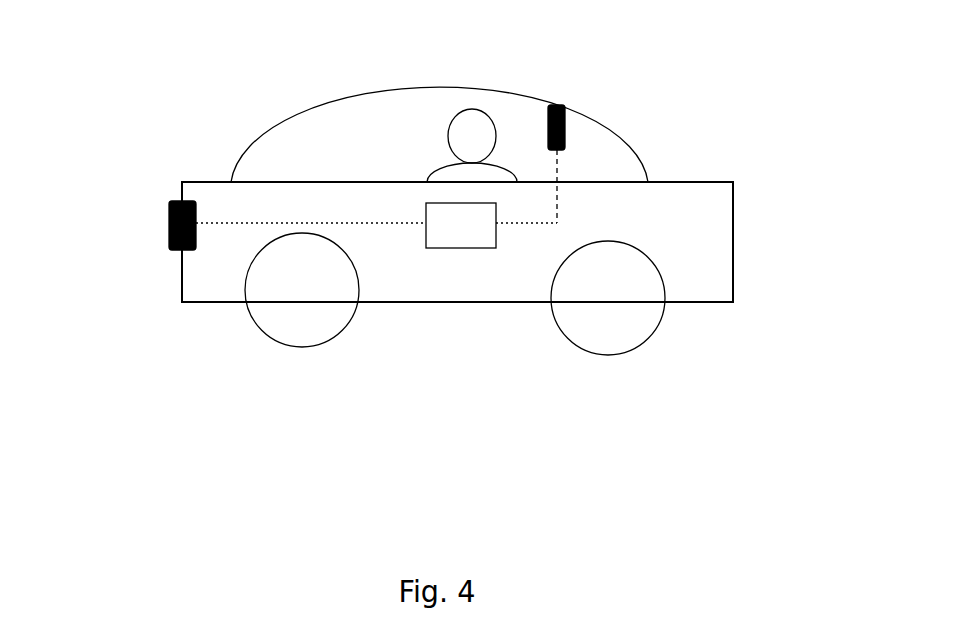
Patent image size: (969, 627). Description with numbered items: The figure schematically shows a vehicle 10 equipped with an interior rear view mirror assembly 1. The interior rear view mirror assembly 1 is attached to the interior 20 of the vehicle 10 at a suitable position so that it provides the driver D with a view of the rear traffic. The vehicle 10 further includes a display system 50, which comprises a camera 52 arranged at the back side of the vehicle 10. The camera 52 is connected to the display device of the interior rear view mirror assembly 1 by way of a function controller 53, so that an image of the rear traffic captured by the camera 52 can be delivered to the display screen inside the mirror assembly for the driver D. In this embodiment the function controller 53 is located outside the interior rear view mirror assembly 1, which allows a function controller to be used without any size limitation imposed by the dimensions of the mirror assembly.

The vehicle 10 is at (164, 110).
The interior 20 is at (379, 90).
The driver D is at (470, 132).
The interior rear view mirror assembly 1 is at (573, 126).
The camera 52 is at (160, 226).
The function controller 53 is at (376, 225).
The display system 50 is at (461, 268).